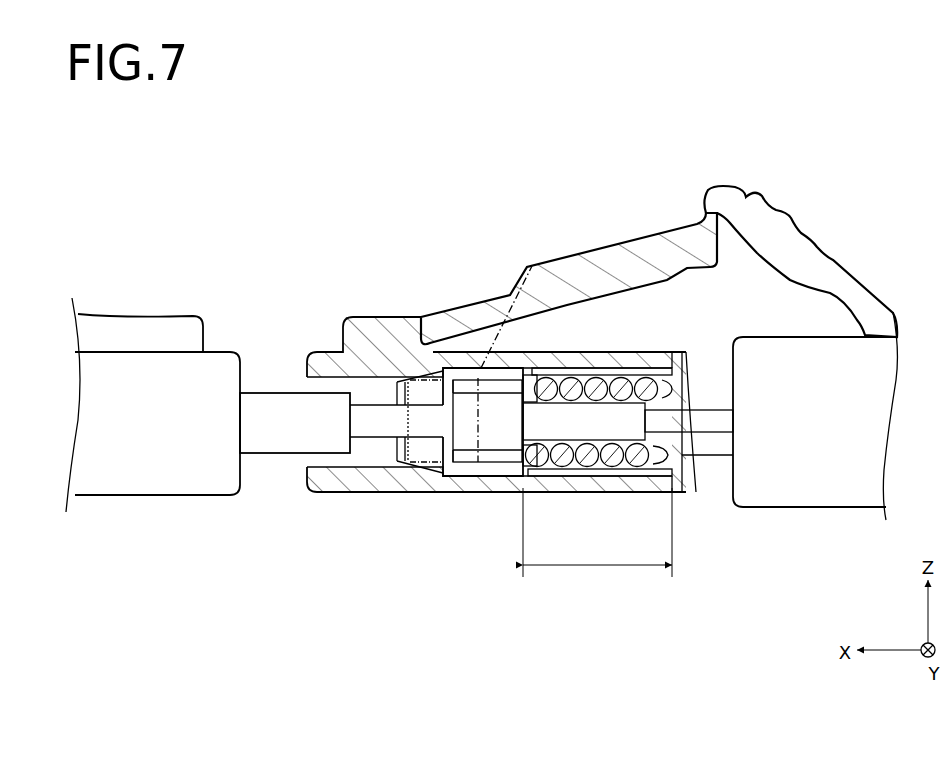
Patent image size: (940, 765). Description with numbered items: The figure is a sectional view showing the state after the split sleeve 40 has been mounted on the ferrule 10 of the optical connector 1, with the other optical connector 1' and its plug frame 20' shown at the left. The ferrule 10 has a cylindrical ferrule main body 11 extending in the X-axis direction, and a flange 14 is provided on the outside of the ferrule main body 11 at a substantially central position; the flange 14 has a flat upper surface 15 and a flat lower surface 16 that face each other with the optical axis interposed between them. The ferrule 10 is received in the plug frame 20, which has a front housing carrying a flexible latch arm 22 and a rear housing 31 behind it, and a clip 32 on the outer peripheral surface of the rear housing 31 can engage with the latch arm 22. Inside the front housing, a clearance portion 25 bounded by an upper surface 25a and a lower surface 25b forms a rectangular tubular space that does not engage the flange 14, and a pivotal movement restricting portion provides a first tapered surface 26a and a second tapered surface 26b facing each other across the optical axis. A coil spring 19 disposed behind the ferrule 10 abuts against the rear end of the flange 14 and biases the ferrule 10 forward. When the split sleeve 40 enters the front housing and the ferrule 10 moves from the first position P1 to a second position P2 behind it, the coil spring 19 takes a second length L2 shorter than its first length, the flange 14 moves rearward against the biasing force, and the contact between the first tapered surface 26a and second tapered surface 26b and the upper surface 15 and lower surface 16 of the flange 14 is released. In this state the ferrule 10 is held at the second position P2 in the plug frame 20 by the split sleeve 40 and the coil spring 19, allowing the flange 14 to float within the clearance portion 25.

The optical connector 1 is at (442, 177).
The optical connector 1' is at (153, 341).
The ferrule 10 is at (472, 370).
The ferrule main body 11 is at (370, 440).
The flange 14 is at (510, 472).
The upper surface 15 is at (497, 391).
The lower surface 16 is at (472, 470).
The coil spring 19 is at (633, 465).
The plug frame 20 is at (470, 382).
The plug frame 20' is at (159, 299).
The latch arm 22 is at (650, 247).
The clearance portion 25 is at (482, 478).
The upper surface 25a is at (530, 368).
The lower surface 25b is at (527, 476).
The first tapered surface 26a is at (436, 371).
The second tapered surface 26b is at (437, 470).
The rear housing 31 is at (805, 508).
The clip 32 is at (795, 215).
The split sleeve 40 is at (275, 392).
The first position P1 is at (416, 384).
The second position P2 is at (530, 264).
The second length L2 is at (597, 540).